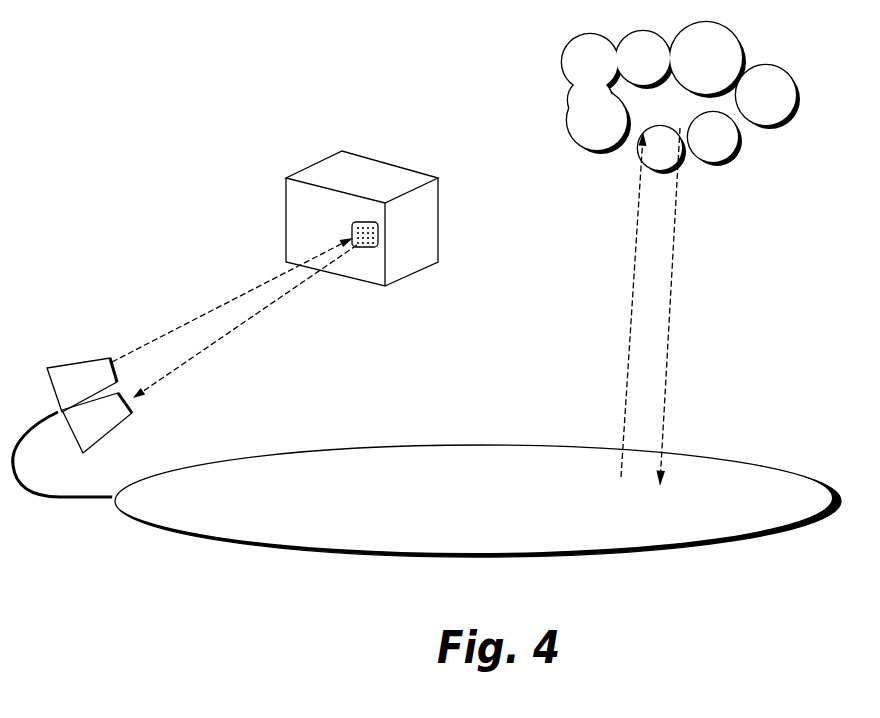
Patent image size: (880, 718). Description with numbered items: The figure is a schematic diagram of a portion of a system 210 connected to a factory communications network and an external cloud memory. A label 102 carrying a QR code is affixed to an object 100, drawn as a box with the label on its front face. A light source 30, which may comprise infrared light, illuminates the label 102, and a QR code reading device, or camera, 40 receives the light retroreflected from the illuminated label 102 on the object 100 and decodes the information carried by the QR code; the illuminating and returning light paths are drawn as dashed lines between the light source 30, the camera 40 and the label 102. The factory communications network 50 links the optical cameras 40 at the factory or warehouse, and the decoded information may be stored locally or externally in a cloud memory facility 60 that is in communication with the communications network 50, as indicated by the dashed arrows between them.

The system 210 is at (186, 125).
The object 100 is at (432, 173).
The label 102 is at (354, 248).
The light source 30 is at (81, 361).
The QR code reading device 40 is at (125, 425).
The factory communications network 50 is at (433, 446).
The cloud memory facility 60 is at (676, 97).